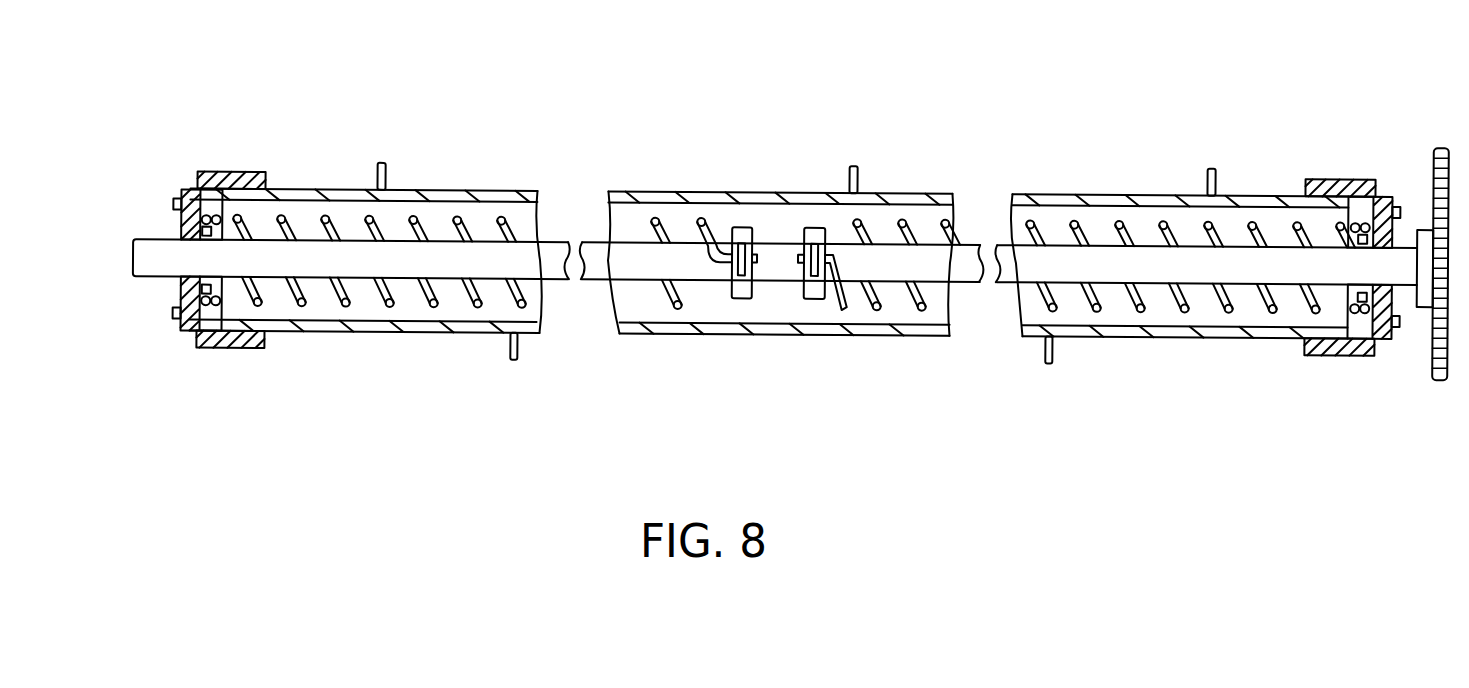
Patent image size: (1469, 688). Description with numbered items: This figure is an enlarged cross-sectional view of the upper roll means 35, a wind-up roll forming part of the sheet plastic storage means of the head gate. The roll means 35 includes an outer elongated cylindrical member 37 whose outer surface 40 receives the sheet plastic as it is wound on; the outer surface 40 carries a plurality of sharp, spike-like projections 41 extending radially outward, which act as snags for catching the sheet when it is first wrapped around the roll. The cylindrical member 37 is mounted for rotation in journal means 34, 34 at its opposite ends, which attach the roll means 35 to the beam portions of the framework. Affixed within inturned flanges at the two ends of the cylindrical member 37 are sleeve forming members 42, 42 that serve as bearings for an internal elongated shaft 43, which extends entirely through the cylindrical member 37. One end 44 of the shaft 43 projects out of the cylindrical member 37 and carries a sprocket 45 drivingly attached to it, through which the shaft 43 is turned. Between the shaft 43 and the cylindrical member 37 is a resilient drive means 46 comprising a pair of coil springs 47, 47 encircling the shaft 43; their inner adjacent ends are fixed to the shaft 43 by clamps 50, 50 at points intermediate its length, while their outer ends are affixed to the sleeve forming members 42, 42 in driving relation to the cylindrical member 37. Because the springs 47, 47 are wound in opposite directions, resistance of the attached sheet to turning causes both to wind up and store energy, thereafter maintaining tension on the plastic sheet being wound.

The journal means 34 is at (222, 174).
The upper roll means 35 is at (1087, 163).
The outer elongated cylindrical member 37 is at (1128, 188).
The outer surface 40 is at (658, 331).
The spike-like projections 41 is at (857, 174).
The sleeve forming members 42 is at (186, 291).
The internal elongated shaft 43 is at (483, 254).
The end of the shaft 44 is at (1403, 256).
The sprocket 45 is at (1446, 360).
The resilient drive means 46 is at (713, 219).
The coil springs 47 is at (434, 305).
The clamps 50 is at (742, 226).